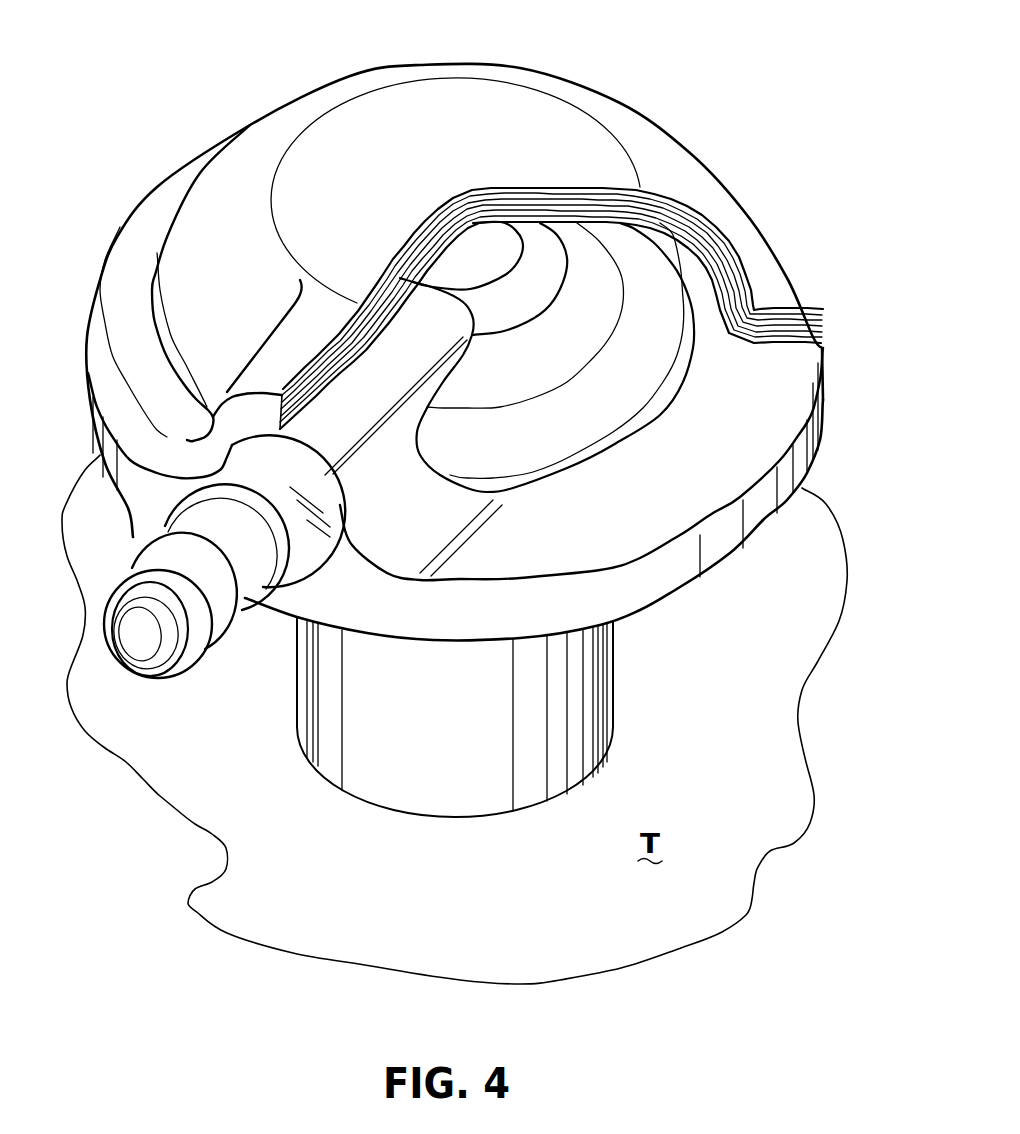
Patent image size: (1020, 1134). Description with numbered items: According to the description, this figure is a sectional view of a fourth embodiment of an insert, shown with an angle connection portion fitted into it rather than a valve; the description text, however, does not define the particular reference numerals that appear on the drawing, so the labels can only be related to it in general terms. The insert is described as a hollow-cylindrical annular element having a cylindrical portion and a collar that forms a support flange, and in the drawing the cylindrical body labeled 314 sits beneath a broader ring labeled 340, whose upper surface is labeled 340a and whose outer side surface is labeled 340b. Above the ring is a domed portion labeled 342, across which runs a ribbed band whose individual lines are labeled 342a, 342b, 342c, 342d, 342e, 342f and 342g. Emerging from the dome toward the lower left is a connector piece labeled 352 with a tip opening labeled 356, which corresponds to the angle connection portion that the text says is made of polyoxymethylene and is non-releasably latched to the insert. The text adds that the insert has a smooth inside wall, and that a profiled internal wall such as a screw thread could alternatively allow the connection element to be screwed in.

The stem 314 is at (607, 687).
The cap ring 340 is at (464, 358).
The top face of cap ring 340a is at (642, 578).
The side wall of cap ring 340b is at (680, 513).
The dome 342 is at (504, 327).
The rib line 342a is at (730, 340).
The rib line 342b is at (738, 350).
The rib line 342c is at (742, 357).
The rib line 342d is at (757, 343).
The rib line 342e is at (790, 310).
The rib line 342f is at (770, 307).
The rib line 342g is at (757, 300).
The connector fitting 352 is at (210, 584).
The connector tip opening 356 is at (145, 646).